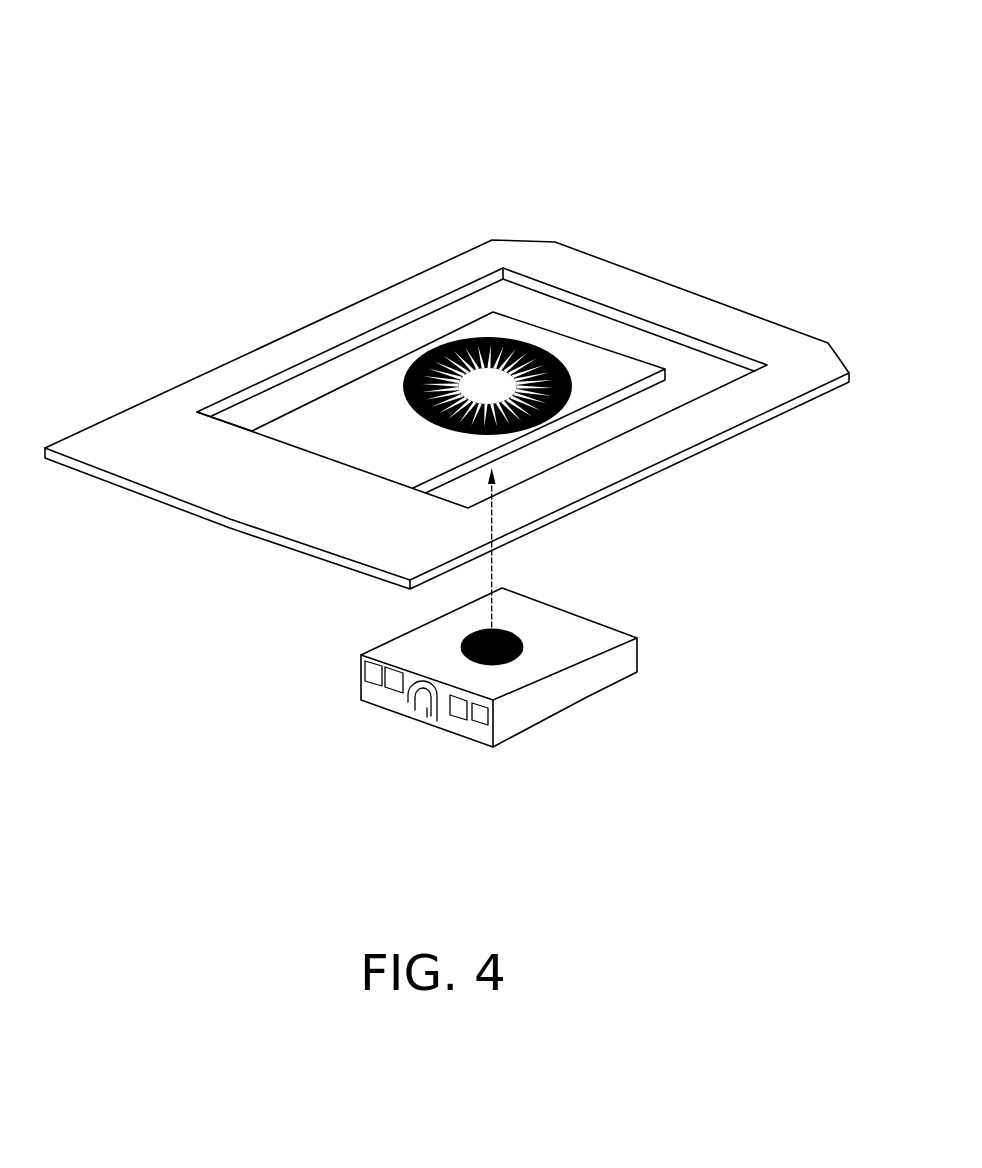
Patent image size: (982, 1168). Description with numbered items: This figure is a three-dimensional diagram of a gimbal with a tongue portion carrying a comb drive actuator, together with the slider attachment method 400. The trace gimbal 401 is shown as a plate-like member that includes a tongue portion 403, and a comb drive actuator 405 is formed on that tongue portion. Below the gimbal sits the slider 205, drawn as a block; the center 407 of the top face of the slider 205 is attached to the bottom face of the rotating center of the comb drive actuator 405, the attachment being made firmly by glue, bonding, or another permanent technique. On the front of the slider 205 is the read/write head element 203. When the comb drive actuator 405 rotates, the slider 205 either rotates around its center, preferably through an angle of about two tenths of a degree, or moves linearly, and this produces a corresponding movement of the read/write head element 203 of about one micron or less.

The slider attachment method 400 is at (795, 93).
The trace gimbal 401 is at (758, 325).
The tongue portion 403 is at (621, 365).
The comb drive actuator 405 is at (503, 337).
The center of the top face of the slider 407 is at (522, 647).
The slider 205 is at (627, 663).
The read/write head element 203 is at (423, 708).